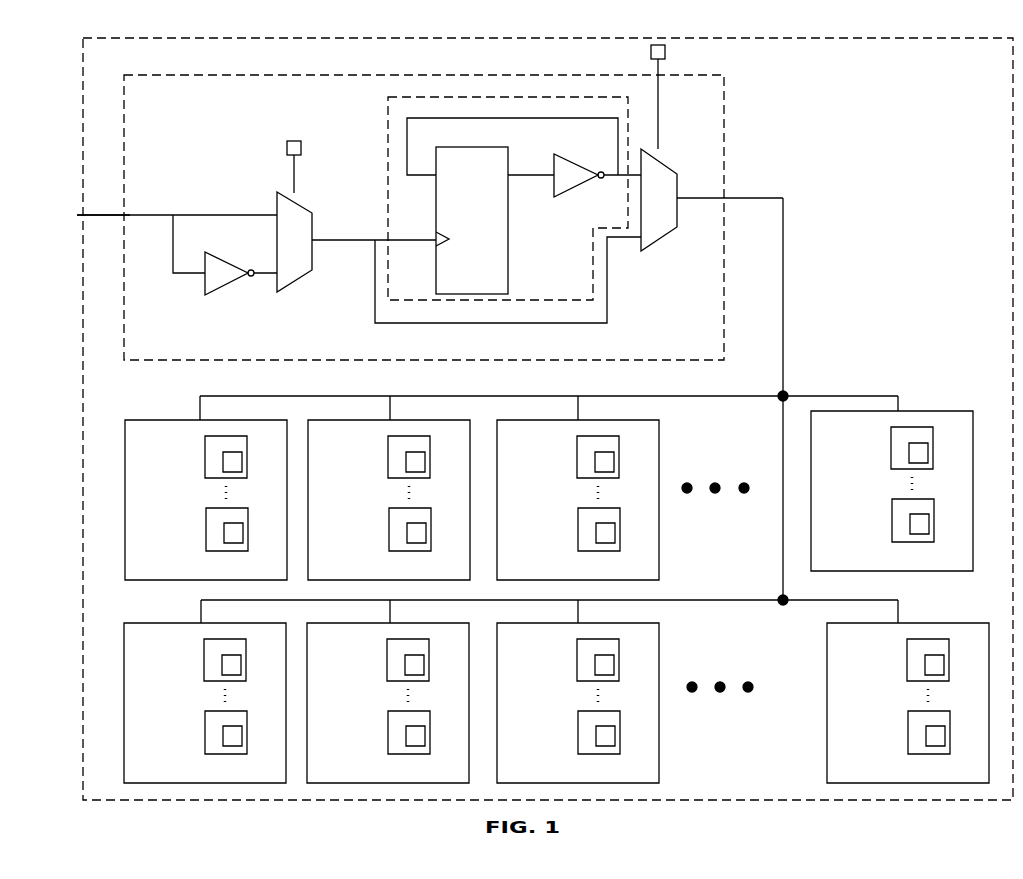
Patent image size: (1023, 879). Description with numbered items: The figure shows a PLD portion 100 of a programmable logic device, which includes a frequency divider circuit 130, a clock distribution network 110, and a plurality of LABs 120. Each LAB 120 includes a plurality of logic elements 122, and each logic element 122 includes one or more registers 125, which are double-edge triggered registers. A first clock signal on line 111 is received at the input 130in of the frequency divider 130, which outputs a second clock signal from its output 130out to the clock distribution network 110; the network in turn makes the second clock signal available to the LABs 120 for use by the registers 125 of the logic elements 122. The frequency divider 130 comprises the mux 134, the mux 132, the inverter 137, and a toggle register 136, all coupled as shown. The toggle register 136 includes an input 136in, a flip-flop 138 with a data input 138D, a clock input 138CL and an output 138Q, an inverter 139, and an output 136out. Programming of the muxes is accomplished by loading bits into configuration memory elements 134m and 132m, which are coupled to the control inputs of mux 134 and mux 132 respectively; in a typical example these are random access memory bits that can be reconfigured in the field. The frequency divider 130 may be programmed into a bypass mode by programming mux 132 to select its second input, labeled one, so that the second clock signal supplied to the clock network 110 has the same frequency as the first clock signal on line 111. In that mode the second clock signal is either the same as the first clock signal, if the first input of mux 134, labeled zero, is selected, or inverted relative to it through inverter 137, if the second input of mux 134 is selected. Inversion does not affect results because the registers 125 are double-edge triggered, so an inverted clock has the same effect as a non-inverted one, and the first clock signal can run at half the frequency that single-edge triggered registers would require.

The PLD portion 100 is at (750, 828).
The clock distribution network 110 is at (786, 252).
The line 111 is at (97, 217).
The LAB 120 is at (124, 485).
The logic element 122 is at (959, 716).
The register 125 is at (955, 745).
The frequency divider circuit 130 is at (725, 118).
The input 130in is at (121, 215).
The output 130out is at (733, 196).
The mux 132 is at (670, 233).
The configuration memory element 132m is at (651, 52).
The mux 134 is at (288, 286).
The configuration memory element 134m is at (287, 148).
The toggle register 136 is at (629, 118).
The input 136in is at (388, 238).
The output 136out is at (627, 168).
The inverter 137 is at (232, 284).
The flip-flop 138 is at (436, 213).
The input 138D is at (435, 170).
The output 138Q is at (512, 173).
The input 138CL is at (448, 247).
The inverter 139 is at (567, 193).